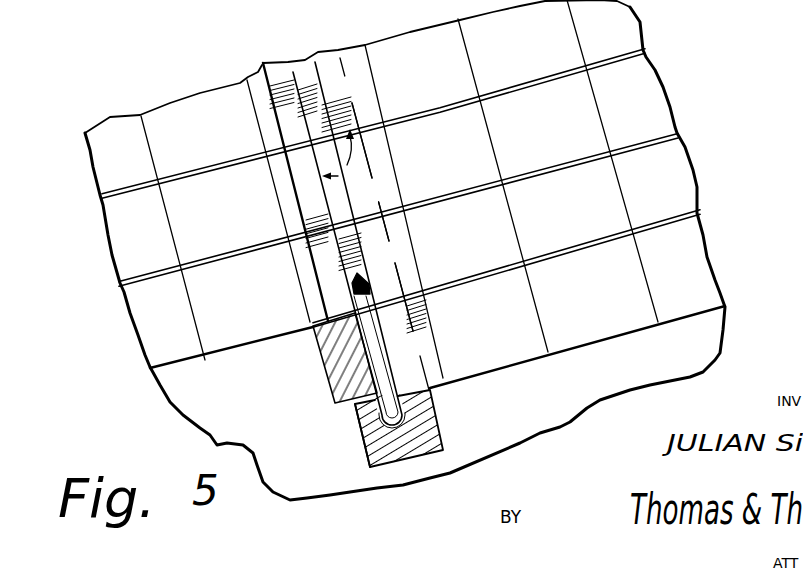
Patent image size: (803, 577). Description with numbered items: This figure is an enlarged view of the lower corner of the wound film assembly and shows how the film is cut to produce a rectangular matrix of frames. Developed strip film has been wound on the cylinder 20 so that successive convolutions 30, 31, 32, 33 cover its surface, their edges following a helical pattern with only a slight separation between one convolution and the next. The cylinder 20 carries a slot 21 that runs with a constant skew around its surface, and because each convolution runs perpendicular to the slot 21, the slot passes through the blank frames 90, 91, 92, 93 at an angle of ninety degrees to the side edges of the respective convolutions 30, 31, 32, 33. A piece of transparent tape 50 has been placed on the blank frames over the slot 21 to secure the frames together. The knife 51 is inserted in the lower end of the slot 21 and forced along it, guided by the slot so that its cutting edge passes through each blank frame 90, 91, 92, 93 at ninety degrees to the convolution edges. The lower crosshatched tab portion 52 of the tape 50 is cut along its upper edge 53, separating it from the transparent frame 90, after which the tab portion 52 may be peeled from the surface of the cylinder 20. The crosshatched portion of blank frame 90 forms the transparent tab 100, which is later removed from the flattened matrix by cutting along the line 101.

The cylinder 20 is at (713, 353).
The slot 21 is at (364, 441).
The convolution 30 is at (697, 260).
The convolution 31 is at (677, 172).
The convolution 32 is at (660, 92).
The convolution 33 is at (620, 20).
The transparent tape 50 is at (279, 80).
The knife 51 is at (352, 288).
The tab portion 52 is at (439, 436).
The upper edge 53 is at (428, 392).
The blank frame 90 is at (428, 364).
The blank frame 91 is at (392, 241).
The blank frame 92 is at (373, 174).
The blank frame 93 is at (362, 108).
The transparent tab 100 is at (328, 378).
The cutting line 101 is at (312, 330).